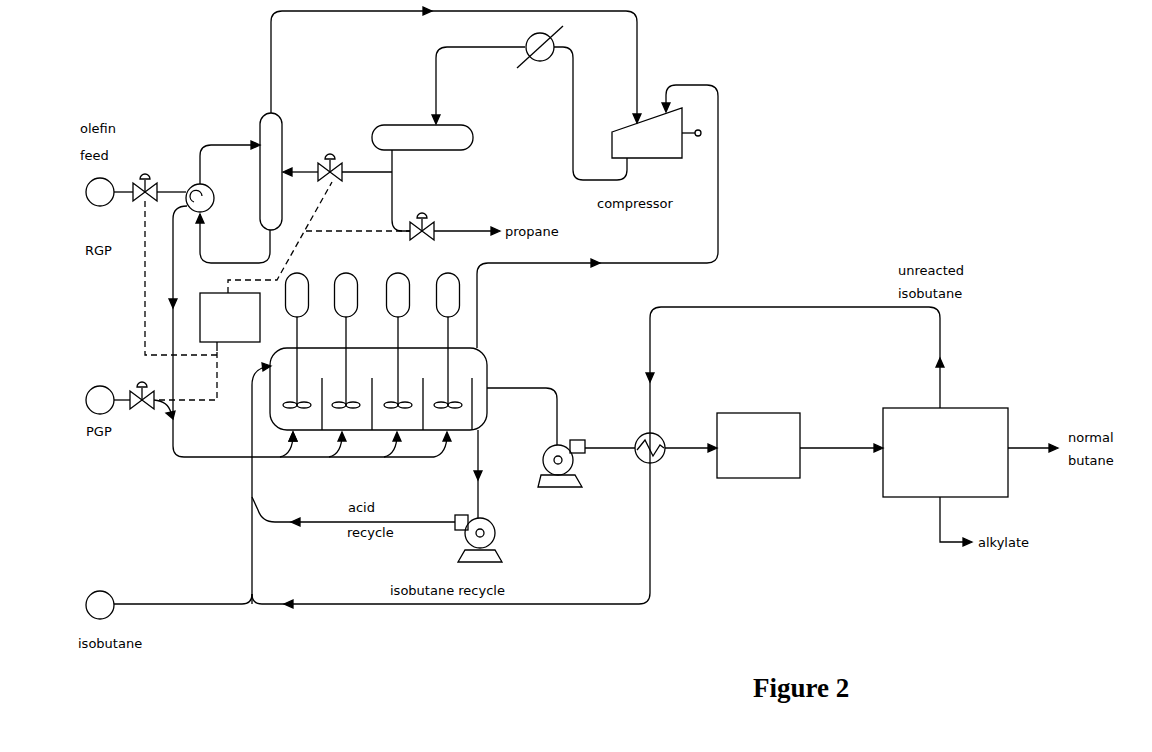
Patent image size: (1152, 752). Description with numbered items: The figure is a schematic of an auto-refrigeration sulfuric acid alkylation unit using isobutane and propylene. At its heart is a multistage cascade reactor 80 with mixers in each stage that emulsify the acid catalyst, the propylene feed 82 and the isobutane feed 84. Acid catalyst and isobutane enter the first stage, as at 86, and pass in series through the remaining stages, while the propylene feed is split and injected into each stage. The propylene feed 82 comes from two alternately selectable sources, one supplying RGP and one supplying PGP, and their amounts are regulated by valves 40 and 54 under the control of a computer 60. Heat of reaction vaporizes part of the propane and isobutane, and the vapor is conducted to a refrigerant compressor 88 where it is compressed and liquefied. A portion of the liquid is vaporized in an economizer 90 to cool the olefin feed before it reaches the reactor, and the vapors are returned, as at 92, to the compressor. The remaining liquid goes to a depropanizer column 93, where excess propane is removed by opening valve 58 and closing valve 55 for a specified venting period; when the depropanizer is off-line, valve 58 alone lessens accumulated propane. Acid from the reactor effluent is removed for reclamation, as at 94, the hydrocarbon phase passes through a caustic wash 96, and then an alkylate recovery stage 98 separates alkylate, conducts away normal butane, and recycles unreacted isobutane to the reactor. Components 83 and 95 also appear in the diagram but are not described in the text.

The valve 40 is at (152, 182).
The valve 54 is at (134, 416).
The valve 55 is at (326, 158).
The valve 58 is at (432, 217).
The computer 60 is at (246, 328).
The multistage cascade reactor 80 is at (478, 360).
The propylene feed 82 is at (105, 366).
The feed heat exchanger 83 is at (212, 190).
The isobutane feed 84 is at (102, 592).
The first stage inlet 86 is at (245, 393).
The refrigerant compressor 88 is at (668, 150).
The economizer 90 is at (352, 66).
The vapor return 92 is at (639, 72).
The depropanizer column 93 is at (463, 150).
The acid removal 94 is at (494, 527).
The reactor effluent pump 95 is at (558, 488).
The caustic wash 96 is at (738, 479).
The alkylate recovery stage 98 is at (995, 415).